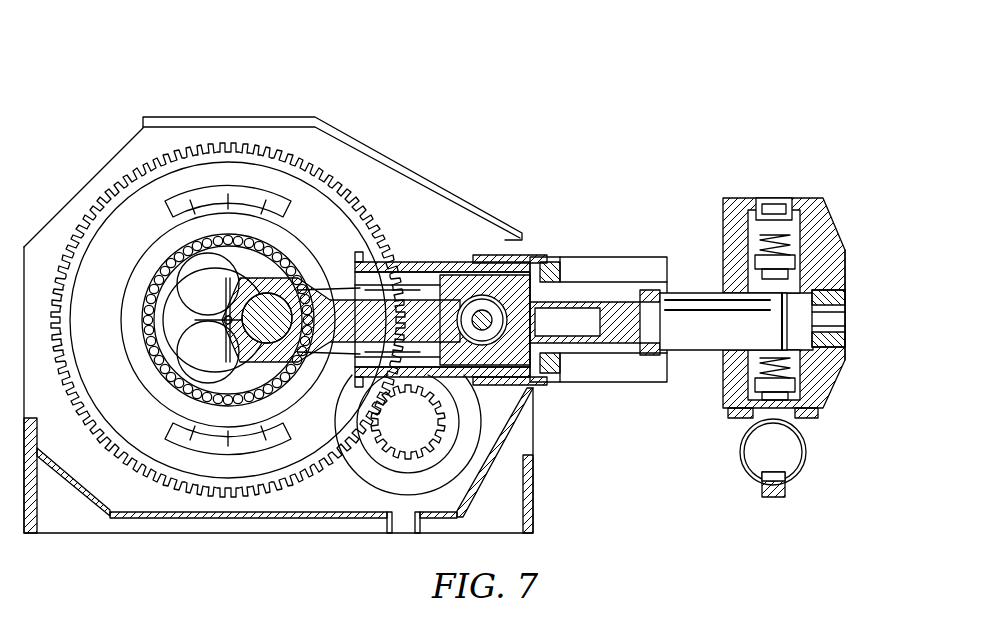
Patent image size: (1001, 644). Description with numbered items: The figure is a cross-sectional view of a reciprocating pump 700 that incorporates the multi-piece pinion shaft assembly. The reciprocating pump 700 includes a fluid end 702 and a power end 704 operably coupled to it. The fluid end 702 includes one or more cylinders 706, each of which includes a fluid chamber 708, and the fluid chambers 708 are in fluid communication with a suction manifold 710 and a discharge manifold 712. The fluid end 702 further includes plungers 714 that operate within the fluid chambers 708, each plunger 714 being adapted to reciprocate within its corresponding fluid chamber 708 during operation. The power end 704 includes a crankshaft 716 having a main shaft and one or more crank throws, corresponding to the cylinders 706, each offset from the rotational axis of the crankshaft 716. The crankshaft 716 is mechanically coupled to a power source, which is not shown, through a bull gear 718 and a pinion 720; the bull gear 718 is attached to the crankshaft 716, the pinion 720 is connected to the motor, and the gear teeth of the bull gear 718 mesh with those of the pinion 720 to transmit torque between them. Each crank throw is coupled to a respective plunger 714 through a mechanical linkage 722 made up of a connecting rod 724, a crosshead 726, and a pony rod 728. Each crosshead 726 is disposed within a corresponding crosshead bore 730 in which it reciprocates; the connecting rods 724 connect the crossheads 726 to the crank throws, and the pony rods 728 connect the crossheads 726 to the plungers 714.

The reciprocating pump 700 is at (556, 93).
The fluid end 702 is at (775, 174).
The power end 704 is at (59, 150).
The cylinder 706 is at (860, 305).
The fluid chamber 708 is at (847, 270).
The suction manifold 710 is at (803, 458).
The discharge manifold 712 is at (823, 198).
The plunger 714 is at (738, 328).
The crankshaft 716 is at (161, 330).
The bull gear 718 is at (280, 146).
The pinion 720 is at (415, 418).
The mechanical linkage 722 is at (569, 399).
The connecting rod 724 is at (393, 323).
The crosshead 726 is at (515, 262).
The pony rod 728 is at (622, 300).
The crosshead bore 730 is at (430, 302).